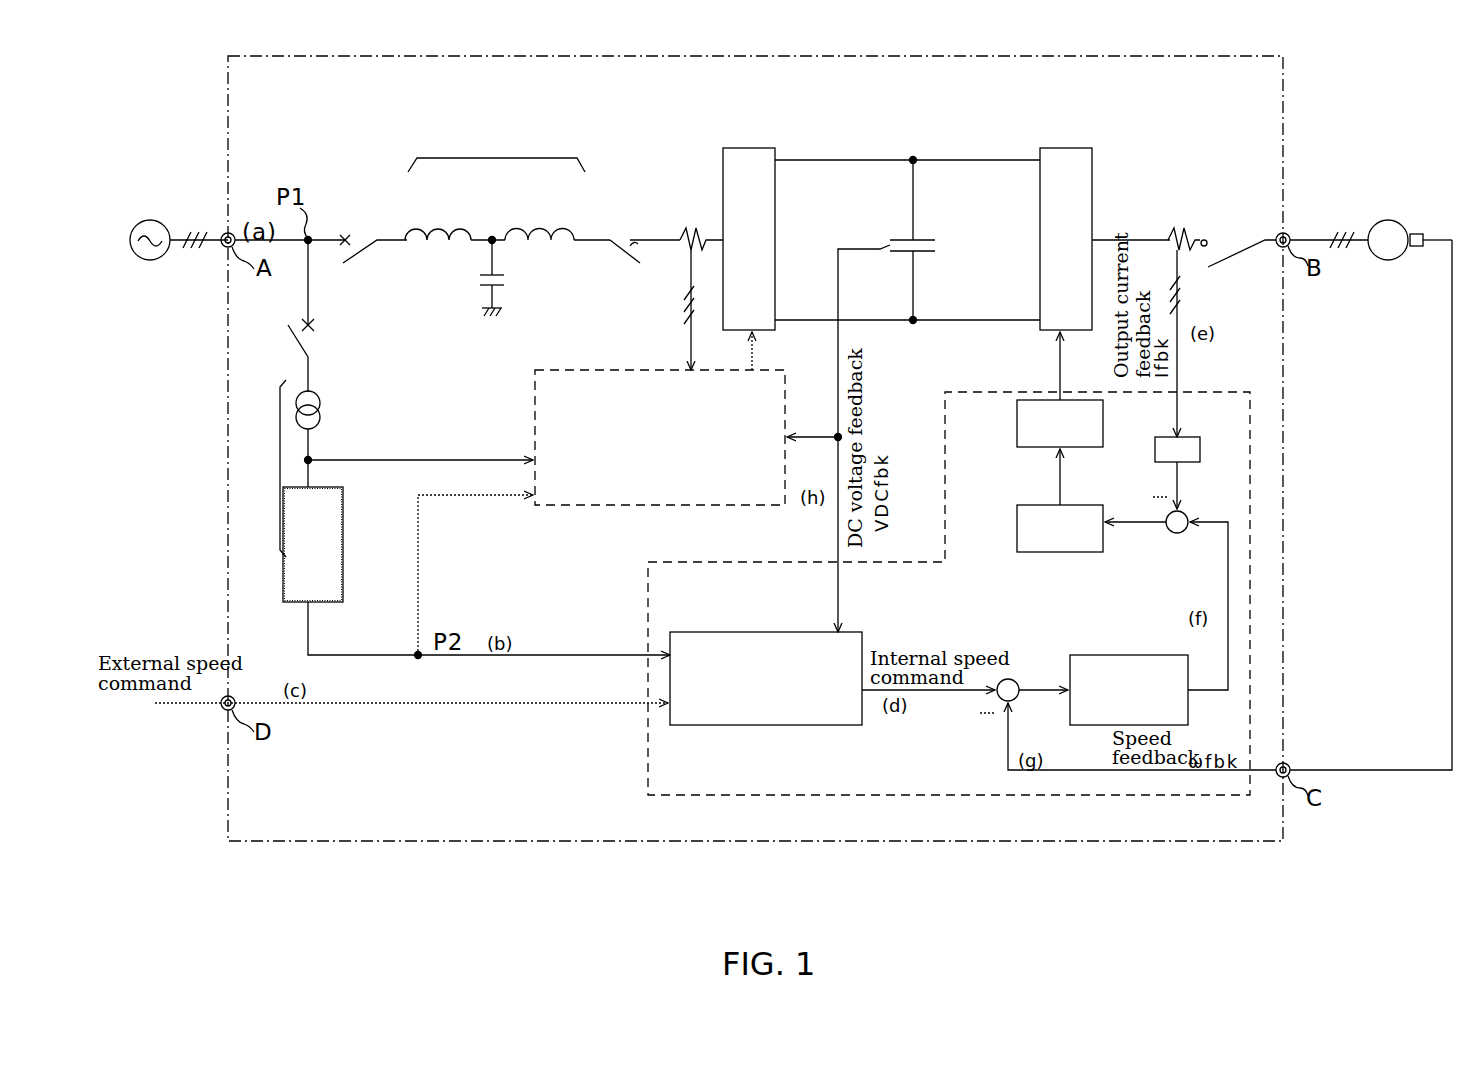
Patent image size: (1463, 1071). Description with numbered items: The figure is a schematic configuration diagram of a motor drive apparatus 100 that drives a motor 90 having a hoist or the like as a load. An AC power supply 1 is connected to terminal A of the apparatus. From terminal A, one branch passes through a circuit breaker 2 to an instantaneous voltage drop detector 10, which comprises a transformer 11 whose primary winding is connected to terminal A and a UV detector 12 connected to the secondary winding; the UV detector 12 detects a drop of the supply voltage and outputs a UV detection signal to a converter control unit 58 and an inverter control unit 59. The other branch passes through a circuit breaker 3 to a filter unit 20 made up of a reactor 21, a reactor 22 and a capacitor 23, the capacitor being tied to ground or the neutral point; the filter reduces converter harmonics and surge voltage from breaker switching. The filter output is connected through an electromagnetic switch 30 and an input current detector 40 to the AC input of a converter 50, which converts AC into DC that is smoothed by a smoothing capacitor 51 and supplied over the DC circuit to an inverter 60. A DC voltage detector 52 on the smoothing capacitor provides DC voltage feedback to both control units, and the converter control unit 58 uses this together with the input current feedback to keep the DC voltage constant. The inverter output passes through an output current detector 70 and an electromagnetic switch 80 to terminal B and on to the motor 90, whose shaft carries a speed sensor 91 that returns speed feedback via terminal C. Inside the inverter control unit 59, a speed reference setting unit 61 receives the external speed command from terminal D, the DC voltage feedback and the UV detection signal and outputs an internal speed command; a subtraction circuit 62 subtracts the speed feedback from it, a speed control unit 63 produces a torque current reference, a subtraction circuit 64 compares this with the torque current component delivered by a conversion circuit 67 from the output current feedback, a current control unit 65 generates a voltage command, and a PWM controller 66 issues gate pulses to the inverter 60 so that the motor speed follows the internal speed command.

The AC power supply 1 is at (144, 220).
The circuit breaker 2 is at (322, 346).
The circuit breaker 3 is at (368, 240).
The instantaneous voltage drop detector 10 is at (278, 468).
The transformer 11 is at (322, 406).
The UV detector 12 is at (344, 520).
The filter unit 20 is at (495, 157).
The reactor 21 is at (440, 239).
The reactor 22 is at (545, 239).
The capacitor 23 is at (510, 280).
The electromagnetic switch 30 is at (626, 230).
The input current detector 40 is at (679, 230).
The converter 50 is at (751, 148).
The smoothing capacitor 51 is at (932, 242).
The DC voltage detector 52 is at (874, 244).
The converter control unit 58 is at (533, 400).
The inverter control unit 59 is at (648, 772).
The inverter 60 is at (1058, 148).
The speed reference setting unit 61 is at (760, 634).
The subtraction circuit 62 is at (1011, 680).
The speed control unit 63 is at (1190, 727).
The subtraction circuit 64 is at (1180, 535).
The current control unit 65 is at (1035, 553).
The PWM controller 66 is at (1016, 430).
The conversion circuit 67 is at (1200, 452).
The output current detector 70 is at (1162, 228).
The electromagnetic switch 80 is at (1234, 228).
The motor 90 is at (1380, 220).
The speed sensor 91 is at (1428, 237).
The motor drive apparatus 100 is at (228, 98).